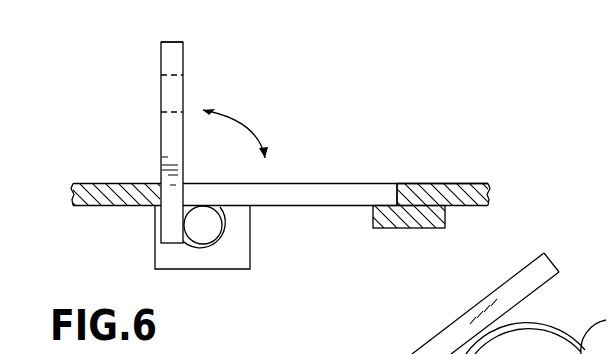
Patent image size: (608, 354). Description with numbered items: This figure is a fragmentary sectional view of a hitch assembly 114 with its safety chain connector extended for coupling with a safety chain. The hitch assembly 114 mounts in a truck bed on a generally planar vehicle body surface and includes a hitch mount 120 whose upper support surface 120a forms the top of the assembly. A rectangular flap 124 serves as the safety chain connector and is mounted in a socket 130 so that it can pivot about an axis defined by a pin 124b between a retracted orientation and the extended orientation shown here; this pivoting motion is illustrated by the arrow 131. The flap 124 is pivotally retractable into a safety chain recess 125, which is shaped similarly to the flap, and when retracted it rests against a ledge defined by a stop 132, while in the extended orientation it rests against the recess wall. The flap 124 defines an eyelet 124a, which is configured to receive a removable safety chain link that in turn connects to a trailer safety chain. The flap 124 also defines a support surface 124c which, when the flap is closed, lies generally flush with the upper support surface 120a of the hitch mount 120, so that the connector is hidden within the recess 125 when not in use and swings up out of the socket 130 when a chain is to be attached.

The hitch assembly 114 is at (465, 173).
The hitch mount 120 is at (100, 207).
The upper support surface 120a is at (440, 183).
The flap 124 is at (160, 145).
The eyelet 124a is at (296, 92).
The pin 124b is at (160, 58).
The support surface 124c is at (200, 234).
The safety chain recess 125 is at (397, 199).
The socket 130 is at (238, 258).
The arrow 131 is at (250, 125).
The stop 132 is at (404, 229).